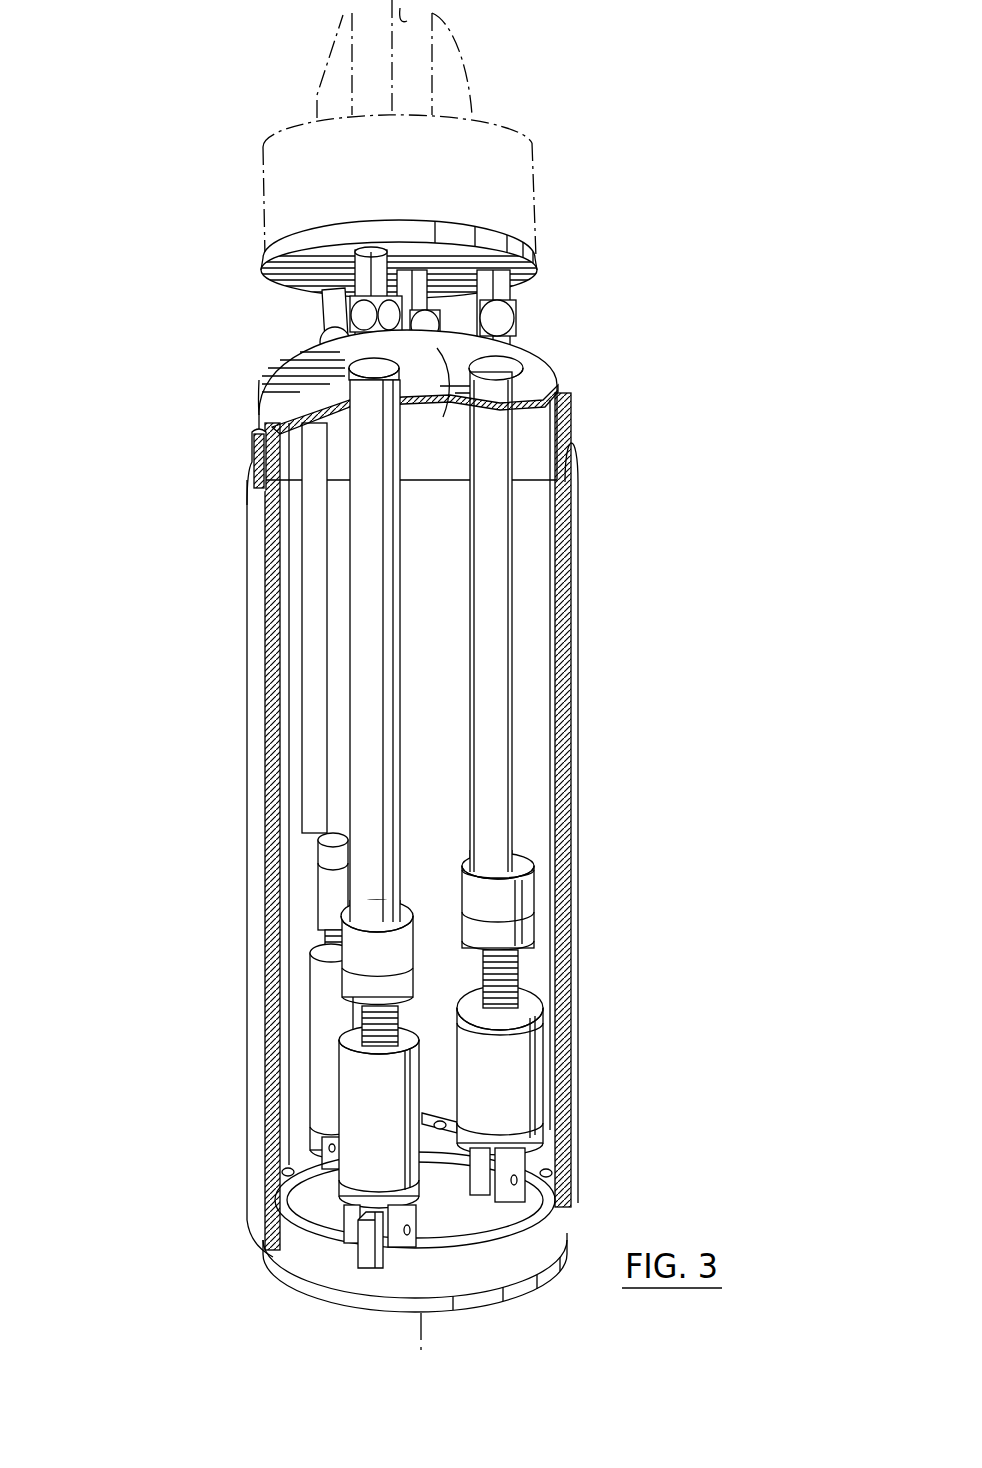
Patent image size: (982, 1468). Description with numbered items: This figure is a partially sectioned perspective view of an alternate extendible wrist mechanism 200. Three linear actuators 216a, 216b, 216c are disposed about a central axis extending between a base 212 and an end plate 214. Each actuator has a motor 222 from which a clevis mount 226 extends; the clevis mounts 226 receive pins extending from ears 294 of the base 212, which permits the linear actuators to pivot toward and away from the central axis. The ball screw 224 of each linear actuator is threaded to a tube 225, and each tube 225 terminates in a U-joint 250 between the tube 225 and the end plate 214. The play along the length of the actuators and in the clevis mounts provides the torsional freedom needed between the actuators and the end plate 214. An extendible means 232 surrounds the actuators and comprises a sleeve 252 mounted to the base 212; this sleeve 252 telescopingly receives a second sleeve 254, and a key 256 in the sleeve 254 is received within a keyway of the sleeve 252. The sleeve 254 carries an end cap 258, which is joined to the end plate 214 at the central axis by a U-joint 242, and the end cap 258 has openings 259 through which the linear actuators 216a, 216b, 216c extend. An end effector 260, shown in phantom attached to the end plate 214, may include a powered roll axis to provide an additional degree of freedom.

The extendible wrist mechanism 200 is at (360, 675).
The base 212 is at (322, 1260).
The end plate 214 is at (263, 275).
The linear actuator 216a is at (332, 568).
The linear actuator 216b is at (380, 613).
The linear actuator 216c is at (524, 614).
The motor 222 is at (554, 1052).
The ball screw 224 is at (520, 978).
The tube 225 is at (500, 680).
The clevis mount 226 is at (515, 1192).
The extendible means 232 is at (576, 778).
The U-joint 242 is at (433, 400).
The U-joint 250 is at (540, 313).
The sleeve 252 is at (256, 806).
The sleeve 254 is at (563, 414).
The key 256 is at (249, 441).
The end cap 258 is at (258, 380).
The openings 259 is at (322, 340).
The end effector 260 is at (537, 203).
The ear 294 is at (378, 1255).